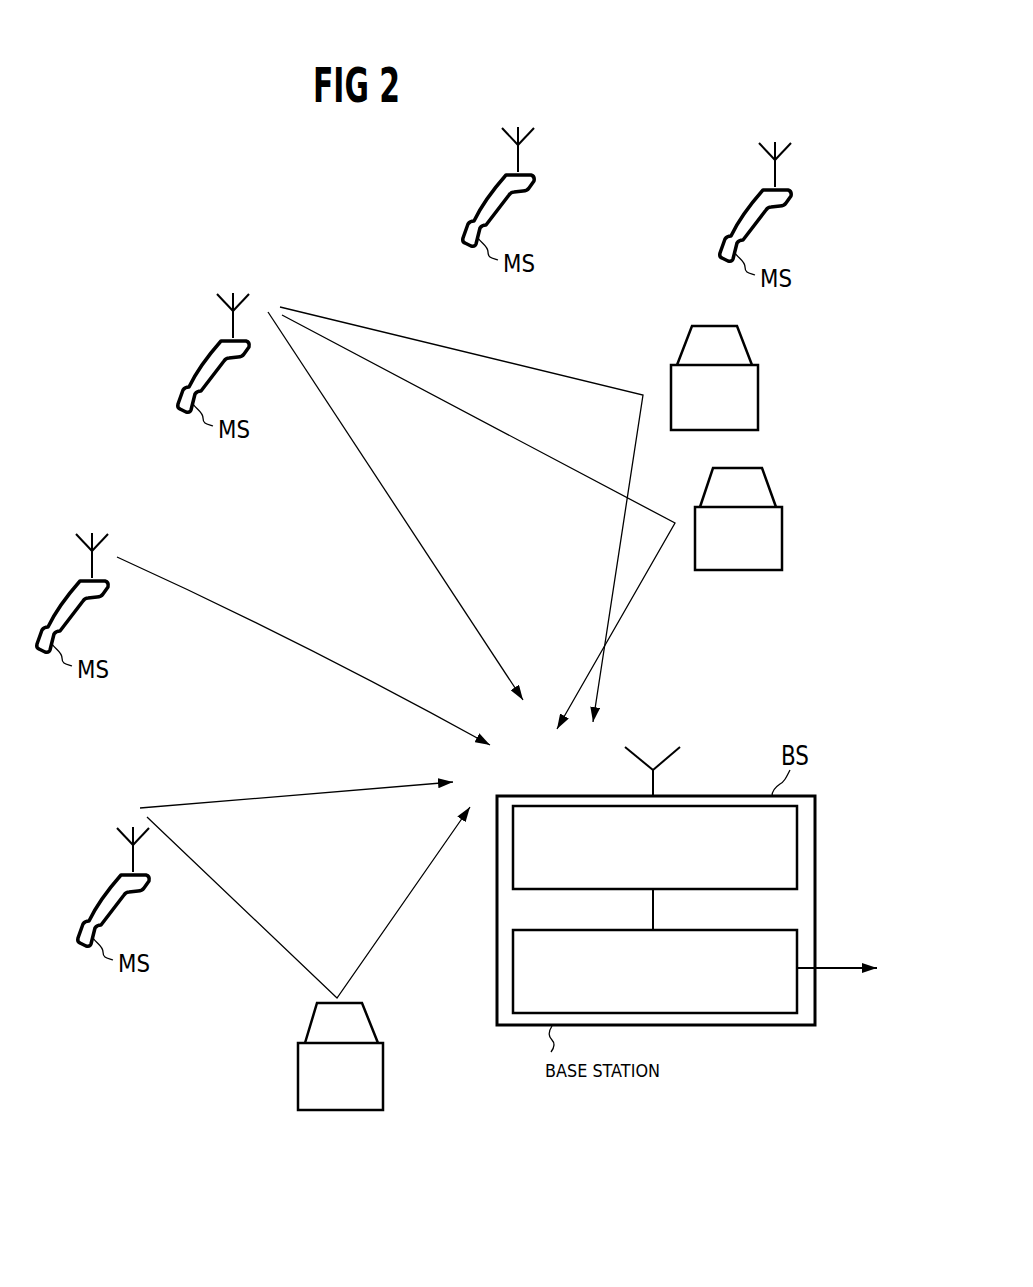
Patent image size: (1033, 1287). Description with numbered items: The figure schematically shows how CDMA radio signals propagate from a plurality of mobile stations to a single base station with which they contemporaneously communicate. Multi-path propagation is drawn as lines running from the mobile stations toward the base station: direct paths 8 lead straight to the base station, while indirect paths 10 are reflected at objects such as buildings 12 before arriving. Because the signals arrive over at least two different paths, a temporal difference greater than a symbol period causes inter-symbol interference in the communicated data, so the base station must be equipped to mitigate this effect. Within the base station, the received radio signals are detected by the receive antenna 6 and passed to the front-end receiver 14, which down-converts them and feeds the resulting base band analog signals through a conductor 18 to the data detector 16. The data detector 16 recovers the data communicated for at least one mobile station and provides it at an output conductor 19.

The receive antenna 6 is at (656, 762).
The direct path 8 is at (382, 486).
The indirect path 10 is at (496, 358).
The building 12 is at (704, 397).
The front-end receiver 14 is at (550, 845).
The data detector 16 is at (550, 969).
The conductor 18 is at (655, 906).
The output conductor 19 is at (842, 966).